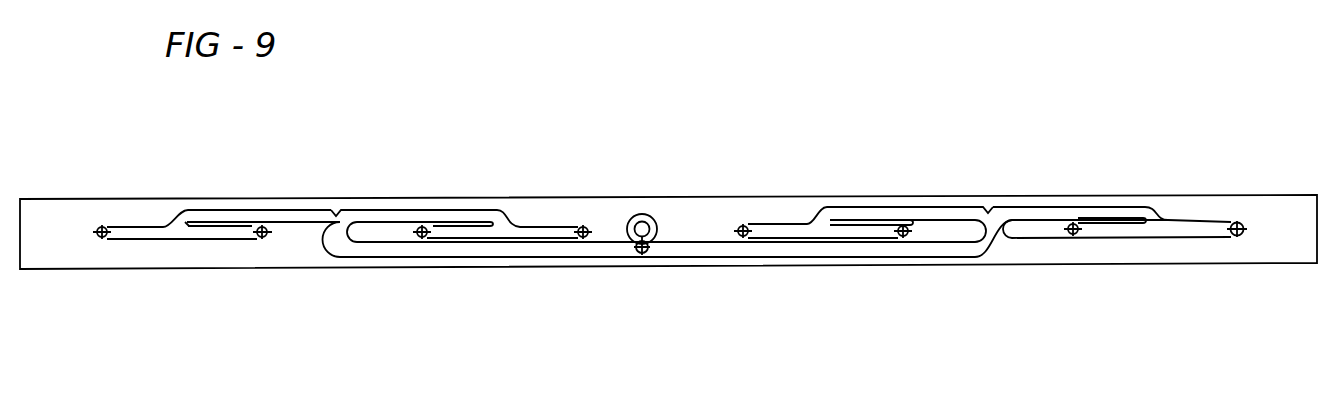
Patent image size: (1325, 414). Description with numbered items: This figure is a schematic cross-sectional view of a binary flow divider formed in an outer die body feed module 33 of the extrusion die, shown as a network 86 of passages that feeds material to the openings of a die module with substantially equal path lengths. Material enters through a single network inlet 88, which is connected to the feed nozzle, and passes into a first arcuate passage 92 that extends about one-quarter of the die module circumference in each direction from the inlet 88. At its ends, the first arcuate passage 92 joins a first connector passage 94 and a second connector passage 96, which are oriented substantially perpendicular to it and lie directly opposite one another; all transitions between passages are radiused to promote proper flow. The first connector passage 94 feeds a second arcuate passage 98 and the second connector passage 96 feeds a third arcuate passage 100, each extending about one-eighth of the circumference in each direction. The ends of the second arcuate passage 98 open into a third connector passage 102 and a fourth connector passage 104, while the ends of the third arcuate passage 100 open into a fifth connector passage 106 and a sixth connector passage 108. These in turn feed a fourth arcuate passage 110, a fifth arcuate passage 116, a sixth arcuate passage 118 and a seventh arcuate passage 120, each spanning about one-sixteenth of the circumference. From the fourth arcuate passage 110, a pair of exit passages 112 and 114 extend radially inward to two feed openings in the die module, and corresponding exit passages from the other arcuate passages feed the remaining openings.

The outer die body feed module 33 is at (52, 213).
The network of passages 86 is at (344, 193).
The network inlet 88 is at (640, 255).
The first arcuate passage 92 is at (512, 247).
The first connector passage 94 is at (333, 231).
The second connector passage 96 is at (985, 240).
The second arcuate passage 98 is at (262, 227).
The third arcuate passage 100 is at (911, 214).
The third connector passage 102 is at (158, 207).
The fourth connector passage 104 is at (512, 221).
The fifth connector passage 106 is at (812, 217).
The sixth connector passage 108 is at (1163, 218).
The fourth arcuate passage 110 is at (182, 226).
The exit passage 112 is at (100, 240).
The exit passage 114 is at (263, 238).
The fifth arcuate passage 116 is at (473, 235).
The sixth arcuate passage 118 is at (833, 232).
The seventh arcuate passage 120 is at (1158, 228).